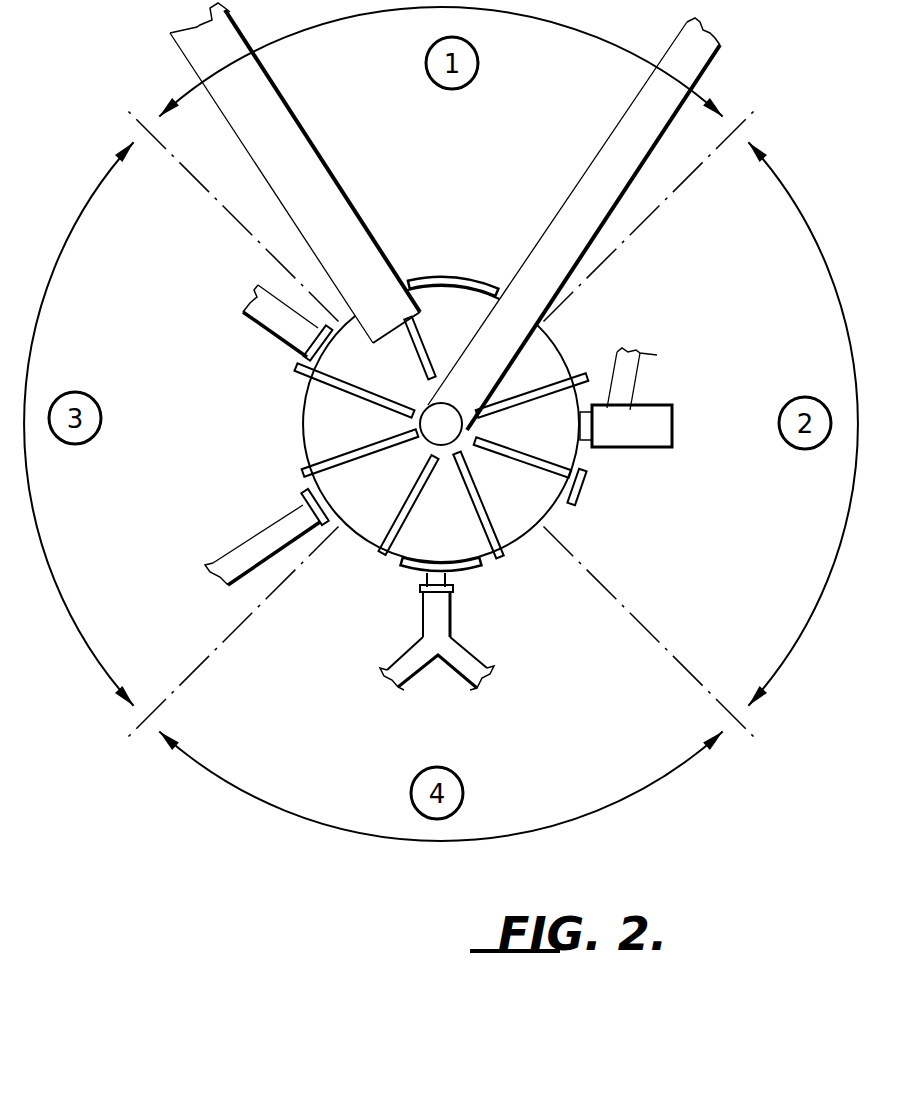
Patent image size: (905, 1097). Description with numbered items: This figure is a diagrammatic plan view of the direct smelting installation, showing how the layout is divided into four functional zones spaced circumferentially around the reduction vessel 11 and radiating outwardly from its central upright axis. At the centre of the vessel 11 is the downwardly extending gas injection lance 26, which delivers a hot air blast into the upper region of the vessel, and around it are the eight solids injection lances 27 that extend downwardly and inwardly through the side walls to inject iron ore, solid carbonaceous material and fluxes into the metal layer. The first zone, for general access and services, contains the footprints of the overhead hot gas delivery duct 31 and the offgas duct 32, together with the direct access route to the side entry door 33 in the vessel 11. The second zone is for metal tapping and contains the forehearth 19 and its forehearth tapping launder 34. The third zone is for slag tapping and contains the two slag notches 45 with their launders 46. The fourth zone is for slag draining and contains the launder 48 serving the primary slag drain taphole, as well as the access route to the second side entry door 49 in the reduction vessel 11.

The reduction vessel 11 is at (550, 512).
The forehearth 19 is at (657, 435).
The gas injection lance 26 is at (437, 425).
The solids injection lances 27 is at (335, 392).
The hot gas delivery duct 31 is at (595, 183).
The offgas duct 32 is at (313, 183).
The side entry door 33 is at (462, 277).
The forehearth tapping launder 34 is at (633, 380).
The slag notches 45 is at (318, 338).
The slag launders 46 is at (258, 296).
The slag drain launder 48 is at (430, 627).
The second side entry door 49 is at (473, 567).